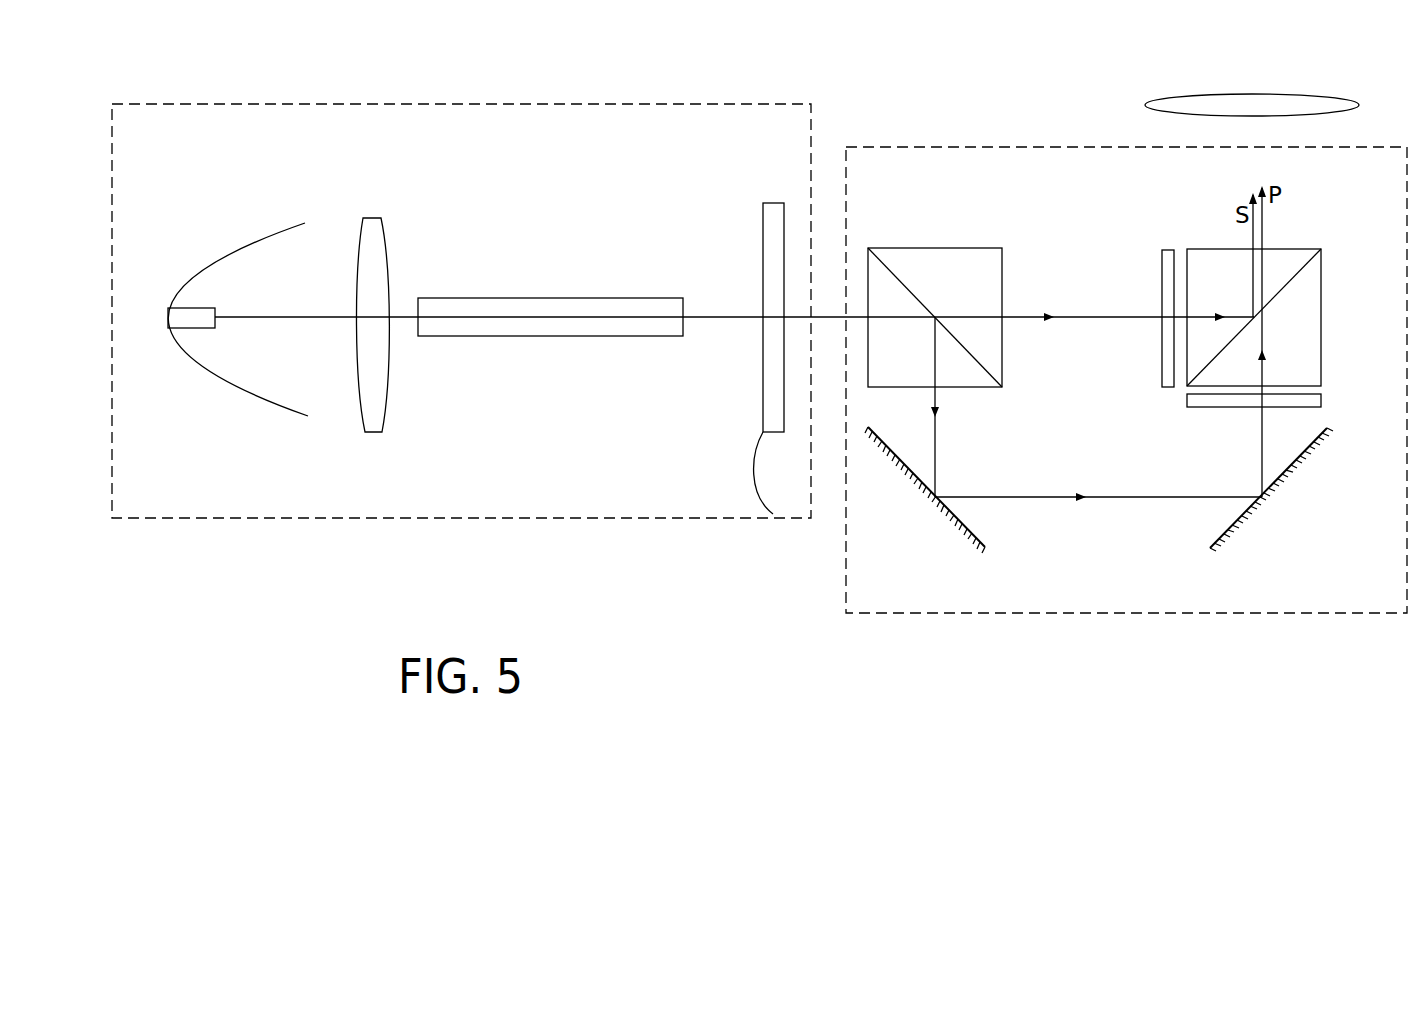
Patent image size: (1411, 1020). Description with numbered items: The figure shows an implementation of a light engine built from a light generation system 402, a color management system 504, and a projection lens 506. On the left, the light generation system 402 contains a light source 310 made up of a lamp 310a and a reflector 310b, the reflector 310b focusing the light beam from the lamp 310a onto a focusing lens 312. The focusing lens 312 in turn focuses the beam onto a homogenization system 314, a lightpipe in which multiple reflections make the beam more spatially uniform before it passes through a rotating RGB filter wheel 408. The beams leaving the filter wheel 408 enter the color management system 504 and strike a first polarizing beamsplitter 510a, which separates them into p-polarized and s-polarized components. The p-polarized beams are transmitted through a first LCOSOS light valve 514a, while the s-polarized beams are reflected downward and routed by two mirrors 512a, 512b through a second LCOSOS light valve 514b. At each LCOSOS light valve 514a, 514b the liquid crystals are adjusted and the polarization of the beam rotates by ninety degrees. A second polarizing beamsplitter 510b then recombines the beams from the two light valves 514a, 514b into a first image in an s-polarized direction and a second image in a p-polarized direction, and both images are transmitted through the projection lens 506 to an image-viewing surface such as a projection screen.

The light source 310 is at (217, 327).
The lamp 310a is at (202, 307).
The reflector 310b is at (272, 227).
The focusing lens 312 is at (373, 279).
The homogenization system 314 is at (550, 364).
The light generation system 402 is at (461, 329).
The rotating RGB filter wheel 408 is at (763, 260).
The color management system 504 is at (1126, 398).
The projection lens 506 is at (1249, 73).
The first polarizing beamsplitter 510a is at (959, 273).
The second polarizing beamsplitter 510b is at (1303, 322).
The mirror 512a is at (925, 507).
The mirror 512b is at (1278, 503).
The first LCOSOS light valve 514a is at (1162, 277).
The second LCOSOS light valve 514b is at (1187, 403).